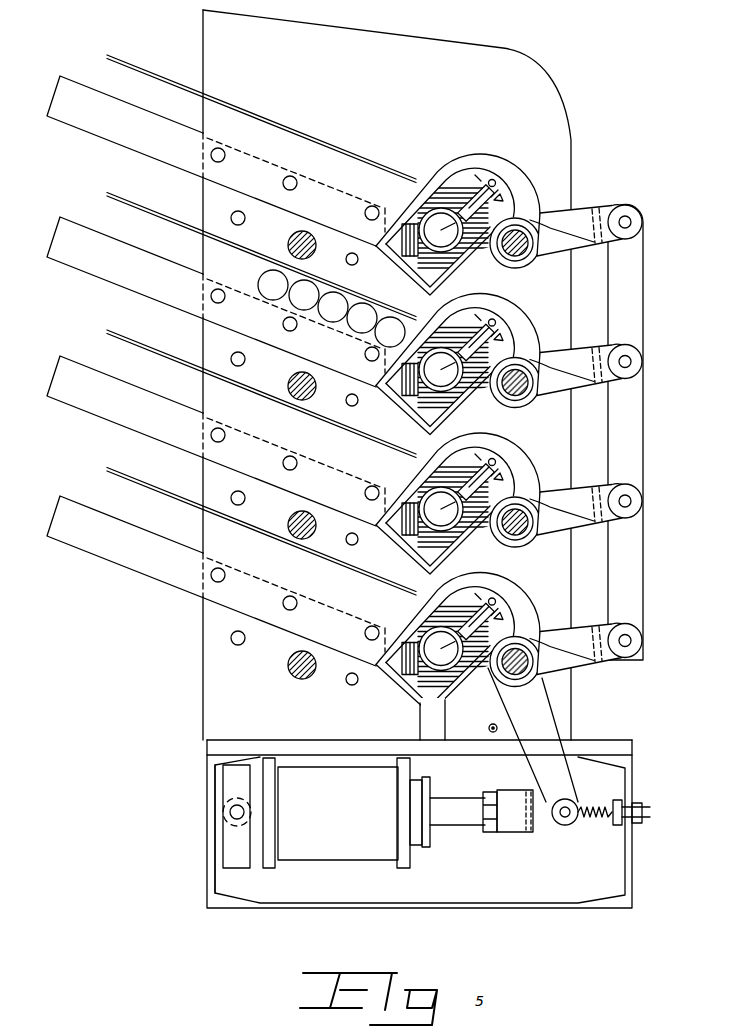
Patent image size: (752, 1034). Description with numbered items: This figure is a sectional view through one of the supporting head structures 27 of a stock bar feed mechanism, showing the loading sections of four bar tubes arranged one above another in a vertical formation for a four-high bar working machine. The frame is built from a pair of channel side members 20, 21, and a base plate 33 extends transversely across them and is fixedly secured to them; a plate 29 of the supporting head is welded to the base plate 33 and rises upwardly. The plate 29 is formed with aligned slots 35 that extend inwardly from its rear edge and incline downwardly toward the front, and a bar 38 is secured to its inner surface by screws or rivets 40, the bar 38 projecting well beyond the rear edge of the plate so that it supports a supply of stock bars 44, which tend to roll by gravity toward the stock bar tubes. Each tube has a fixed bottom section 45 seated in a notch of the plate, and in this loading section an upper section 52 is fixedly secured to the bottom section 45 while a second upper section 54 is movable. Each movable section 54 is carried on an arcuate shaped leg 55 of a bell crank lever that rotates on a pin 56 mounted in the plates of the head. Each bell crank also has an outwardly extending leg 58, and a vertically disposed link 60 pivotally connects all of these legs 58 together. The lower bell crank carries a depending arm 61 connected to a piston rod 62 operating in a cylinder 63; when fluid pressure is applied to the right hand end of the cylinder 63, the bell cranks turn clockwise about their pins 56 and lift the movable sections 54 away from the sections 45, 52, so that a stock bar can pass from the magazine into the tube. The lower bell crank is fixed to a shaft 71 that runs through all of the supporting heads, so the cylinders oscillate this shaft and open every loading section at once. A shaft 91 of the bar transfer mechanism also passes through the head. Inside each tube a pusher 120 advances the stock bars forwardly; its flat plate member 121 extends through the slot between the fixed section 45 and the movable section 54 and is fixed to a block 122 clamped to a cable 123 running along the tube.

The channel side member 20 is at (630, 830).
The channel side member 21 is at (207, 792).
The supporting structure 27 is at (512, 40).
The plate 29 is at (399, 97).
The base plate 33 is at (590, 742).
The slot 35 is at (261, 325).
The bar 38 is at (216, 371).
The screws or rivets 40 is at (283, 184).
The stock bar 44 is at (331, 308).
The bottom section 45 is at (453, 263).
The upper section 52 is at (356, 686).
The second upper section 54 is at (412, 216).
The arcuate shaped leg 55 is at (486, 160).
The pin 56 is at (513, 258).
The outwardly extending leg 58 is at (590, 212).
The link 60 is at (645, 398).
The depending arm 61 is at (533, 735).
The piston rod 62 is at (460, 818).
The cylinder 63 is at (346, 813).
The shaft 71 is at (507, 674).
The shaft 91 is at (288, 240).
The pusher 120 is at (410, 218).
The flat plate member 121 is at (461, 193).
The block 122 is at (491, 192).
The cable 123 is at (500, 337).